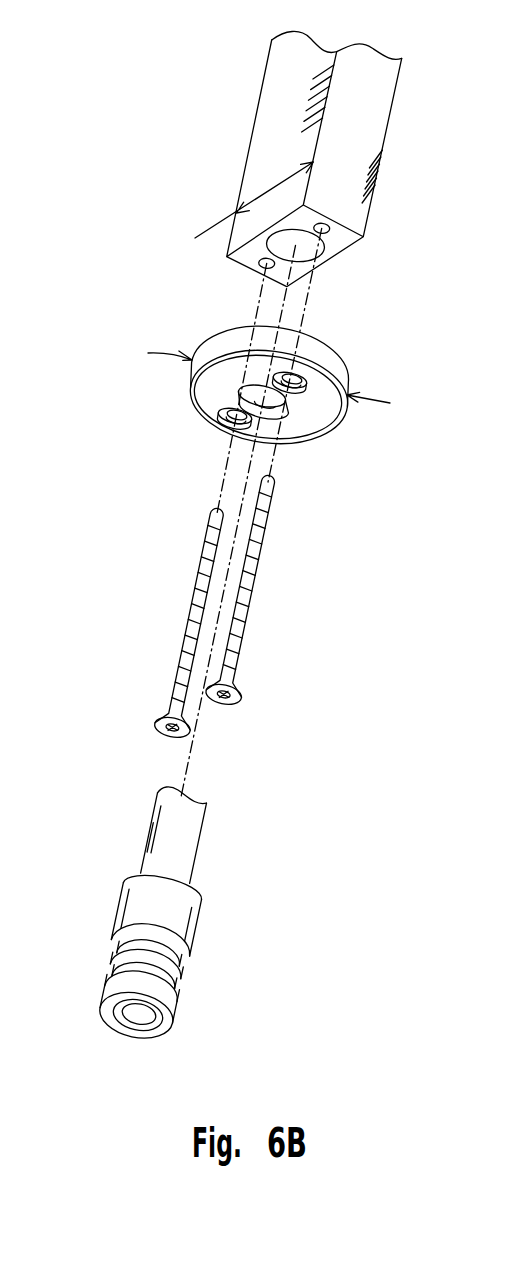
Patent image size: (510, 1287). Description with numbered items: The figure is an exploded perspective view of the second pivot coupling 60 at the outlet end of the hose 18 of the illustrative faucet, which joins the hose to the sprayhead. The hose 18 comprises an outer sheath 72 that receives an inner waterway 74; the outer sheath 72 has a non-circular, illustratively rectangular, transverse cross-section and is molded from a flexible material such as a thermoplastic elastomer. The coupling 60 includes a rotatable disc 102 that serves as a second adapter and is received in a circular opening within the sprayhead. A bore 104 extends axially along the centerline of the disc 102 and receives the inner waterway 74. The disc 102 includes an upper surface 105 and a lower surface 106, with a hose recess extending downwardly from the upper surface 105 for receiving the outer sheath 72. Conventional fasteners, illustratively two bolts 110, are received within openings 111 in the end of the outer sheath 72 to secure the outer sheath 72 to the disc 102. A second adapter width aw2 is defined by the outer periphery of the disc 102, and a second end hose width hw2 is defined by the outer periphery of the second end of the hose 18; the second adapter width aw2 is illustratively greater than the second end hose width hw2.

The hose 18 is at (250, 97).
The second pivot coupling 60 is at (128, 177).
The outer sheath 72 is at (380, 85).
The inner waterway 74 is at (190, 838).
The rotatable disc 102 is at (333, 365).
The bore 104 is at (275, 413).
The upper surface 105 is at (320, 345).
The lower surface 106 is at (208, 395).
The bolts 110 is at (198, 605).
The openings 111 is at (272, 266).
The second end hose width hw2 is at (225, 218).
The second adapter width aw2 is at (240, 371).